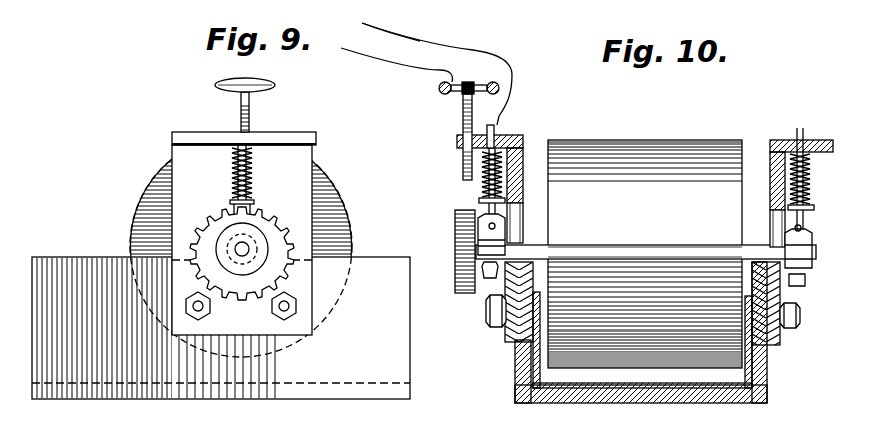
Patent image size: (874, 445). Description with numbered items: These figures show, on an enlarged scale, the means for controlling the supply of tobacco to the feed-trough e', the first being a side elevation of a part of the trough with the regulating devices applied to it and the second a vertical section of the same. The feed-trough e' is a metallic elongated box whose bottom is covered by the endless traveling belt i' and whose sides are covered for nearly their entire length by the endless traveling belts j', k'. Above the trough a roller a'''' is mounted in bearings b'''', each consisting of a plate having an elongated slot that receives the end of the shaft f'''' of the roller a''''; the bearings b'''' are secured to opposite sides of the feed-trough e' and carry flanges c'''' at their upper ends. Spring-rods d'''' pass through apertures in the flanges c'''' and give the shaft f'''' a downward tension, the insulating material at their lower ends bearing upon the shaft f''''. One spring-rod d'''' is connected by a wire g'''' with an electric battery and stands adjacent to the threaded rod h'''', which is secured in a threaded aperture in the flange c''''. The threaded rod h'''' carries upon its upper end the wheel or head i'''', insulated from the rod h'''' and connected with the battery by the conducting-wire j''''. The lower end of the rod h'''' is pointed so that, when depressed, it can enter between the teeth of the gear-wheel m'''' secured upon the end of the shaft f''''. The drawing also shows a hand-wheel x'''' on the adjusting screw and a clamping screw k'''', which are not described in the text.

In FIG. 9, the roller a'''' is at (237, 246).
In FIG. 10, the roller a'''' is at (645, 254).
In FIG. 9, the bearings b'''' is at (242, 240).
In FIG. 10, the bearings b'''' is at (646, 181).
In FIG. 9, the flanges c'''' is at (244, 129).
In FIG. 10, the flanges c'''' is at (625, 133).
In FIG. 9, the spring-rods d'''' is at (233, 208).
In FIG. 10, the spring-rods d'''' is at (639, 207).
In FIG. 9, the feed-trough e' is at (221, 328).
In FIG. 10, the feed-trough e' is at (643, 332).
In FIG. 10, the shaft f'''' is at (646, 237).
In FIG. 10, the wire g'''' is at (442, 74).
In FIG. 9, the threaded rod h'''' is at (252, 146).
In FIG. 10, the wheel or head i'''' is at (469, 77).
In FIG. 10, the conducting-wire j'''' is at (382, 50).
In FIG. 10, the clamping screw k'''' is at (466, 137).
In FIG. 9, the gear-wheel m'''' is at (244, 253).
In FIG. 10, the gear-wheel m'''' is at (451, 251).
In FIG. 9, the hand wheel x'''' is at (245, 76).
In FIG. 10, the endless traveling belt j' is at (545, 340).
In FIG. 10, the endless traveling belt i' is at (642, 376).
In FIG. 10, the endless traveling belt k' is at (732, 342).